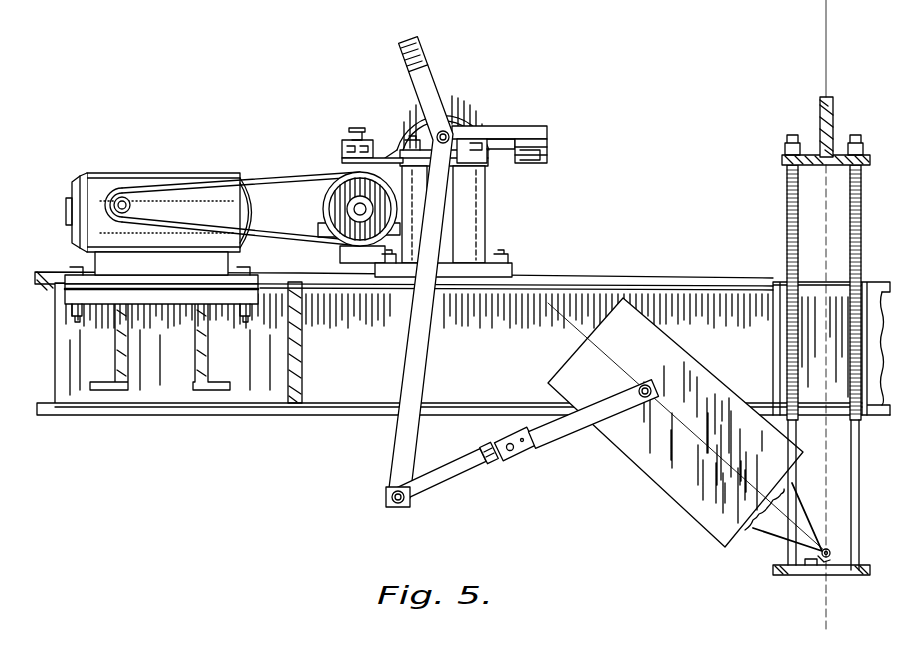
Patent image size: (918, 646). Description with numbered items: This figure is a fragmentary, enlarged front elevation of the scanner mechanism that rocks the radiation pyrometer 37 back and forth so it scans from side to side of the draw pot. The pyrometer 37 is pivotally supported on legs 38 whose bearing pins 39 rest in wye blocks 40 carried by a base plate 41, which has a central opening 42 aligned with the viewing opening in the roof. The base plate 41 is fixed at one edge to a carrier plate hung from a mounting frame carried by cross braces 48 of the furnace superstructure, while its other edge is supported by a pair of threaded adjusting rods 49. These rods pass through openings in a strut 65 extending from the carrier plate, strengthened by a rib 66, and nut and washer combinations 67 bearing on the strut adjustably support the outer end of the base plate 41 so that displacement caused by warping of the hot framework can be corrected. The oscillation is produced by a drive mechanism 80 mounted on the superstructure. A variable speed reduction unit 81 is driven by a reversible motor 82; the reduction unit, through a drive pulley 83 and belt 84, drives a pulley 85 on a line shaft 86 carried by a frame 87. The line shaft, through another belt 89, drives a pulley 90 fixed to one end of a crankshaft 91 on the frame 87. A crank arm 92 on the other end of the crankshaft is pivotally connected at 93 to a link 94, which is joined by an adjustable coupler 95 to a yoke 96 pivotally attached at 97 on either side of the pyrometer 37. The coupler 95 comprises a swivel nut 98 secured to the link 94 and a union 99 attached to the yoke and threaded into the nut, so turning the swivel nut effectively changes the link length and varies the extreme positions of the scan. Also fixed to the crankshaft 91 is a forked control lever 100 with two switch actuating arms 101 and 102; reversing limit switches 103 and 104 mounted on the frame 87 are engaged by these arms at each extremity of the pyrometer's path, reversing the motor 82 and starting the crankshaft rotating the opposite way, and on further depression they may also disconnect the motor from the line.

The radiation pyrometer 37 is at (620, 335).
The legs 38 is at (770, 566).
The bearing pins 39 is at (823, 561).
The wye blocks 40 is at (828, 547).
The base plate 41 is at (772, 575).
The central opening 42 is at (797, 574).
The cross braces 48 is at (165, 396).
The threaded adjusting rods 49 is at (855, 205).
The strut 65 is at (782, 160).
The rib 66 is at (822, 118).
The nut and washer combinations 67 is at (785, 149).
The drive mechanism 80 is at (275, 163).
The variable speed reduction unit 81 is at (95, 178).
The reversible motor 82 is at (258, 217).
The drive pulley 83 is at (123, 198).
The belt 84 is at (275, 170).
The pulley 85 is at (337, 194).
The line shaft 86 is at (357, 200).
The frame 87 is at (500, 205).
The belt 89 is at (398, 133).
The pulley 90 is at (470, 107).
The crankshaft 91 is at (452, 128).
The crank arm 92 is at (398, 460).
The pivotal connection 93 is at (386, 497).
The link 94 is at (447, 478).
The adjustable coupler 95 is at (486, 476).
The yoke 96 is at (573, 430).
The pivotal attachment 97 is at (650, 405).
The swivel nut 98 is at (483, 452).
The union 99 is at (502, 462).
The forked control lever 100 is at (417, 249).
The switch actuating arm 101 is at (495, 128).
The switch actuating arm 102 is at (407, 50).
The reversing limit switch 103 is at (548, 150).
The reversing limit switch 104 is at (350, 140).